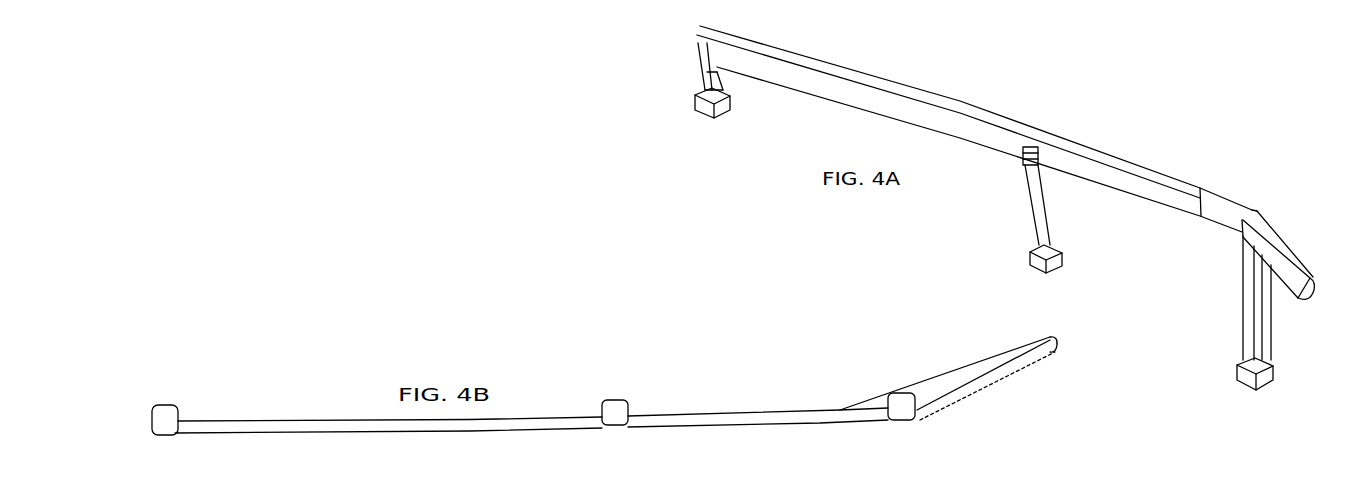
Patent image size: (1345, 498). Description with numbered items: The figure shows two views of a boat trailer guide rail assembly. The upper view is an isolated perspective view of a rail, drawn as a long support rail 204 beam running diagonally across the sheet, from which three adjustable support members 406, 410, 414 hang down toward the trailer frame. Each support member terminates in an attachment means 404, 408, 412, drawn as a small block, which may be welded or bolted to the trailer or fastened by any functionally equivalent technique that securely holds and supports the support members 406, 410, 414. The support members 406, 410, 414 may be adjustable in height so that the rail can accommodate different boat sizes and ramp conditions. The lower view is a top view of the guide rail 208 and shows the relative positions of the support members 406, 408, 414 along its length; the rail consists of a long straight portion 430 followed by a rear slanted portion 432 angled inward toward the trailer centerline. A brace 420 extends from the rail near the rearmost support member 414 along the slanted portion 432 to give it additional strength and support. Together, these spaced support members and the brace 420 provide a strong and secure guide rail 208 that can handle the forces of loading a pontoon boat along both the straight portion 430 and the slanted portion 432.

In FIG. 4A, the support rail 204 is at (974, 129).
In FIG. 4B, the guide rail 208 is at (531, 401).
In FIG. 4A, the attachment means 404 is at (732, 112).
In FIG. 4A, the adjustable support member 406 is at (684, 66).
In FIG. 4B, the adjustable support member 406 is at (168, 447).
In FIG. 4A, the attachment means 408 is at (1039, 277).
In FIG. 4B, the attachment means 408 is at (619, 436).
In FIG. 4A, the adjustable support member 410 is at (1060, 196).
In FIG. 4A, the attachment means 412 is at (1230, 365).
In FIG. 4A, the adjustable support member 414 is at (1250, 285).
In FIG. 4B, the adjustable support member 414 is at (908, 431).
In FIG. 4B, the brace 420 is at (948, 373).
In FIG. 4B, the straight portion 430 is at (457, 458).
In FIG. 4B, the slanted portion 432 is at (987, 386).